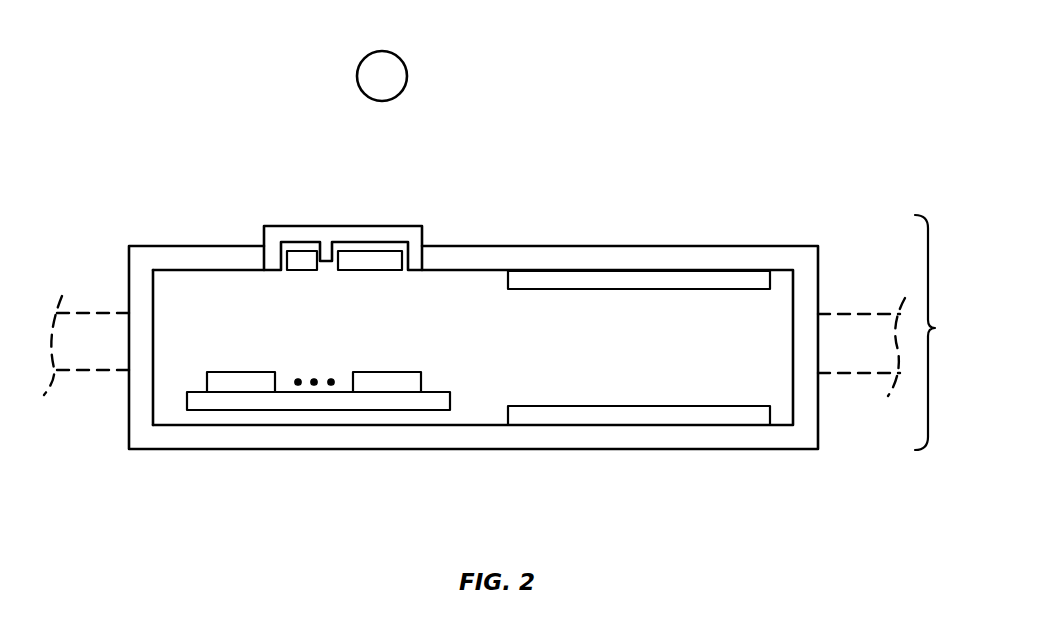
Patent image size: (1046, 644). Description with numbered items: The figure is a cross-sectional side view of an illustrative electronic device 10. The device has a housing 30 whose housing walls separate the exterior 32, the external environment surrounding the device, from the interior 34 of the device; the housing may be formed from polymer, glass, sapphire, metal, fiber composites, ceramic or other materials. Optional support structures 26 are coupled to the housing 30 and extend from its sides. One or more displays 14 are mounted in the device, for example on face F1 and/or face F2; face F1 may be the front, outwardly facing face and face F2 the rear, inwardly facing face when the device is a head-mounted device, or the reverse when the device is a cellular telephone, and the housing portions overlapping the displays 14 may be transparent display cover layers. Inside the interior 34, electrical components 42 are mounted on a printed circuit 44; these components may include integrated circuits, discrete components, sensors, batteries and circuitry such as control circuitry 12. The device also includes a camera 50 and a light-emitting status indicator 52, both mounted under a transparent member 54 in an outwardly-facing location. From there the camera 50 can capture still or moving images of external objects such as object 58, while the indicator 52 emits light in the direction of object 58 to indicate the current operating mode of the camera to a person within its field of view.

The electronic device 10 is at (939, 332).
The control circuitry 12 is at (487, 255).
The display 14 is at (627, 405).
The support structures 26 is at (102, 372).
The housing 30 is at (252, 435).
The exterior 32 is at (174, 136).
The interior 34 is at (170, 397).
The electrical components 42 is at (375, 377).
The printed circuit 44 is at (383, 402).
The camera 50 is at (389, 272).
The status indicator 52 is at (293, 272).
The transparent member 54 is at (402, 237).
The object 58 is at (407, 76).
The face F1 is at (703, 211).
The face F2 is at (708, 476).